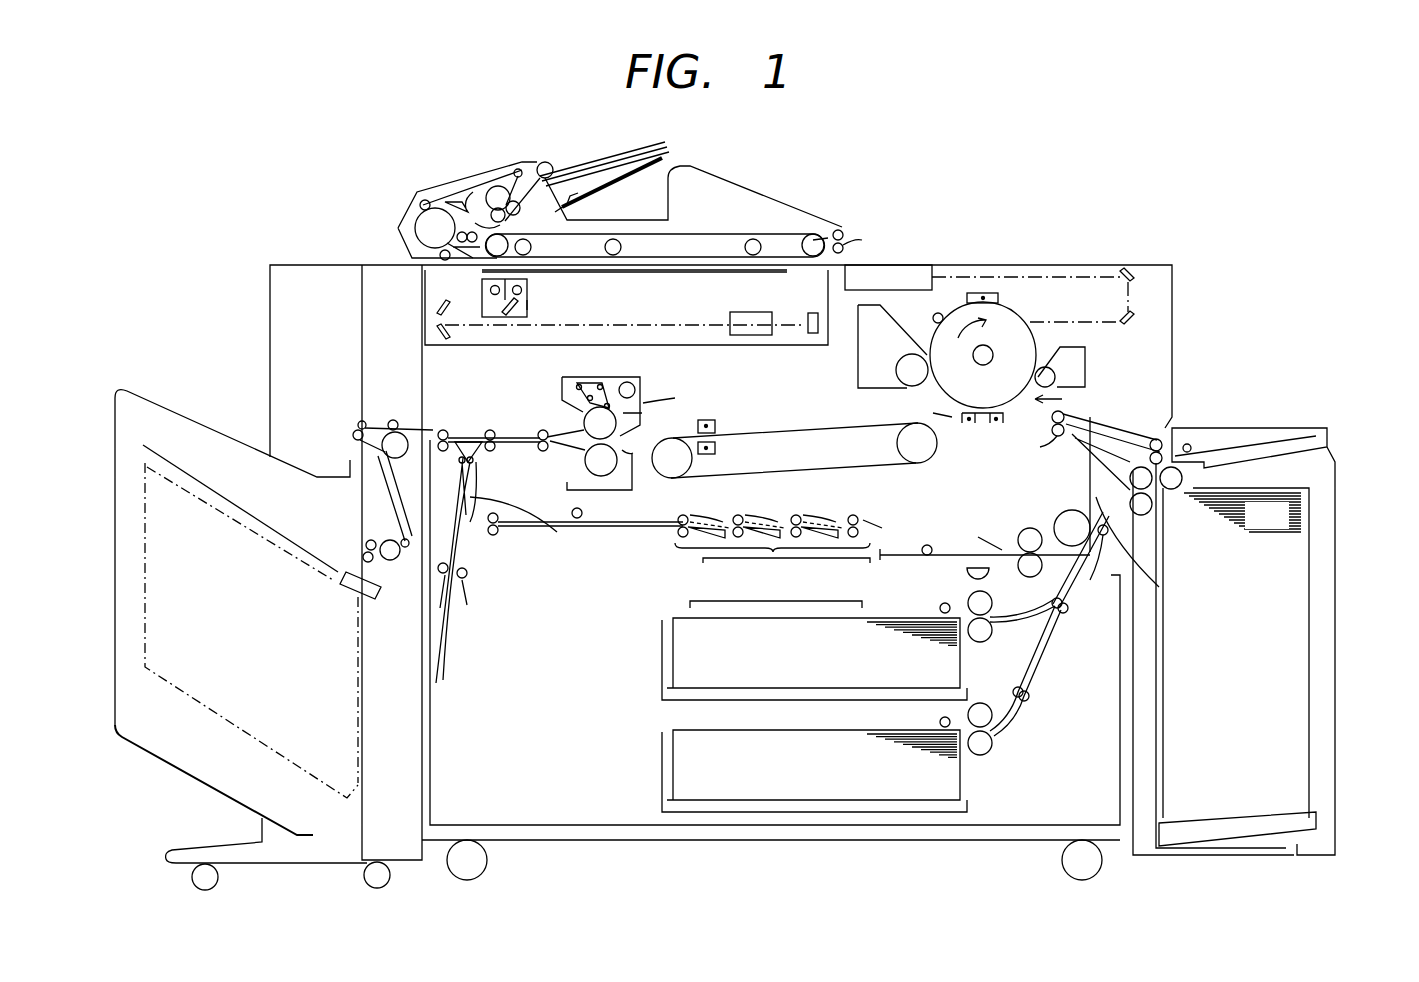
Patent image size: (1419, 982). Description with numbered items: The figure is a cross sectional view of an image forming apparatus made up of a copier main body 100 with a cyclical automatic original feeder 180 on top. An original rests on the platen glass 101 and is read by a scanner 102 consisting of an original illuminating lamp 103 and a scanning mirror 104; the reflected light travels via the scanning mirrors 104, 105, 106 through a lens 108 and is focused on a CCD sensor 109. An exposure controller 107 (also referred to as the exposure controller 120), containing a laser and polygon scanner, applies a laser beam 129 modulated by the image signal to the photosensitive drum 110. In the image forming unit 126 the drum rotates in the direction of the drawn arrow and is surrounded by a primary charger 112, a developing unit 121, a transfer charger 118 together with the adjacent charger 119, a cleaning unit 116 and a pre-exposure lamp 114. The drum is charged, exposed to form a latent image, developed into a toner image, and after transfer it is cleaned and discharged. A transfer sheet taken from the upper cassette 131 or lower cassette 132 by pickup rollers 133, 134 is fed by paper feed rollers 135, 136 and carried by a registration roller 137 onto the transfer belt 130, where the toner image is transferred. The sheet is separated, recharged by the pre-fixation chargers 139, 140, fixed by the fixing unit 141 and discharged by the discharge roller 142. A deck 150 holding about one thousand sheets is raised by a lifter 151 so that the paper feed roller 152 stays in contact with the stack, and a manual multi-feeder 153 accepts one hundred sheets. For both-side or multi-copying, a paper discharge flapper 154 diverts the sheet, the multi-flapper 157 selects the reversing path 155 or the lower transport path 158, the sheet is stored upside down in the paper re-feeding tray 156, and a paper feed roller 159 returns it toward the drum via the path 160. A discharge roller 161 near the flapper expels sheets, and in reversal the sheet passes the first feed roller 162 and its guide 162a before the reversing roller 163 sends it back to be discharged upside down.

The copier main body 100 is at (1174, 330).
The platen glass 101 is at (640, 273).
The scanner 102 is at (529, 308).
The original illuminating lamp 103 is at (528, 288).
The scanning mirror 104 is at (512, 316).
The scanning mirror 105 is at (437, 307).
The scanning mirror 106 is at (437, 331).
The exposure controller 107 is at (600, 328).
The lens 108 is at (730, 320).
The CCD sensor 109 is at (812, 312).
The photosensitive drum 110 is at (1037, 350).
The primary charger 112 is at (1000, 298).
The pre-exposure lamp 114 is at (942, 314).
The cleaning unit 116 is at (858, 345).
The transfer charger 118 is at (990, 425).
The transfer charger 119 is at (966, 425).
The exposure controller 120 is at (890, 263).
The developing unit 121 is at (1086, 370).
The image forming unit 126 is at (1064, 399).
The laser beam 129 is at (1085, 275).
The transfer belt 130 is at (870, 426).
The upper cassette 131 is at (675, 663).
The lower cassette 132 is at (675, 767).
The pickup roller 133 is at (943, 606).
The pickup roller 134 is at (943, 720).
The paper feed roller 135 is at (1040, 662).
The paper feed roller 136 is at (992, 747).
The registration roller 137 is at (1054, 437).
The pre-fixation charger 139 is at (715, 420).
The pre-fixation charger 140 is at (714, 454).
The fixing unit 141 is at (641, 400).
The discharge roller 142 is at (543, 429).
The deck 150 is at (1336, 562).
The lifter 151 is at (1318, 820).
The paper feed roller 152 is at (1174, 491).
The manual multi-feeder 153 is at (1240, 427).
The paper discharge flapper 154 is at (490, 429).
The reversing path 155 is at (447, 656).
The paper re-feeding tray 156 is at (900, 554).
The multi-flapper 157 is at (495, 536).
The lower transport path 158 is at (773, 558).
The paper feed roller 159 is at (1072, 547).
The path 160 is at (1160, 587).
The discharge roller 161 is at (445, 429).
The first feed roller 162 is at (478, 455).
The flapper guide path 162a is at (555, 530).
The reversing roller 163 is at (466, 579).
The cyclical automatic original feeder 180 is at (800, 211).